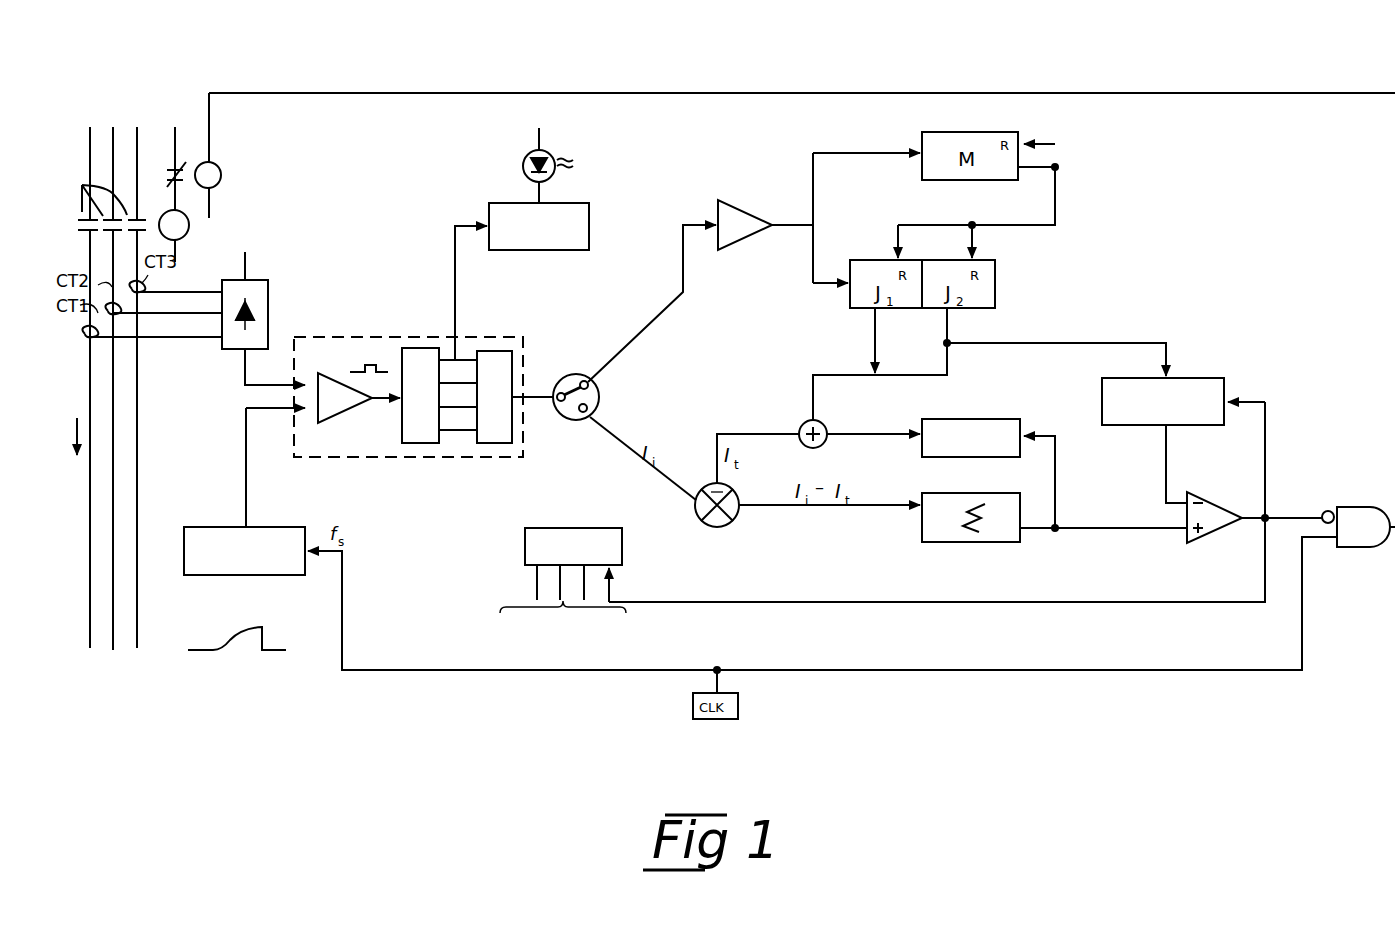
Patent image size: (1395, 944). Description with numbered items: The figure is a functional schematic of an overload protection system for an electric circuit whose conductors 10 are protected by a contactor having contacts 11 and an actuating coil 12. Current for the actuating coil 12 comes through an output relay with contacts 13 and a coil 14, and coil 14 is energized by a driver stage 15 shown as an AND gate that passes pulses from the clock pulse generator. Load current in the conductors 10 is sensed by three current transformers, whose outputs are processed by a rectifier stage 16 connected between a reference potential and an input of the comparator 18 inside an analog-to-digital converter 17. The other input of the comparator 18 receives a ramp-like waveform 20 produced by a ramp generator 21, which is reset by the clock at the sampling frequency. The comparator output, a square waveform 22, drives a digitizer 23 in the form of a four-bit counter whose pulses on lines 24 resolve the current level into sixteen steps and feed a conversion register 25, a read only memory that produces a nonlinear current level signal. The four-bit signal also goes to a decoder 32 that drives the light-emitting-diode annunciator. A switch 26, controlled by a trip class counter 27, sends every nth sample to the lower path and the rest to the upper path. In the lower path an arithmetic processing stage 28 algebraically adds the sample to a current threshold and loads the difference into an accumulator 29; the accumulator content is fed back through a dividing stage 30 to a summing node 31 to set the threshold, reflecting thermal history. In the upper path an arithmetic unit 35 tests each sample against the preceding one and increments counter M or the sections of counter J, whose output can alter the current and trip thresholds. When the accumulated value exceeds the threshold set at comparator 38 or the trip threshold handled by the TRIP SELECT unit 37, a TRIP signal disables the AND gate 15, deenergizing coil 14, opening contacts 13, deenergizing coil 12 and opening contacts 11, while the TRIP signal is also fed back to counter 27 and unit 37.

The conductors 10 is at (118, 658).
The contacts 11 is at (103, 196).
The actuating coil 12 is at (178, 238).
The contacts 13 is at (167, 170).
The coil 14 is at (215, 166).
The driver stage 15 is at (1370, 491).
The rectifier stage 16 is at (268, 303).
The analog-to-digital converter 17 is at (363, 337).
The comparator 18 is at (338, 420).
The ramp-like waveform 20 is at (216, 650).
The ramp generator 21 is at (202, 527).
The square waveform 22 is at (352, 372).
The digitizer 23 is at (420, 444).
The lines 24 is at (450, 360).
The conversion register 25 is at (500, 444).
The switch 26 is at (563, 376).
The counter 27 is at (622, 550).
The arithmetic processing stage 28 is at (725, 524).
The accumulator 29 is at (958, 543).
The dividing stage 30 is at (995, 420).
The summing node 31 is at (824, 424).
The decoder 32 is at (582, 203).
The arithmetic unit 35 is at (735, 215).
The TRIP SELECT unit 37 is at (1195, 378).
The comparator 38 is at (1210, 500).